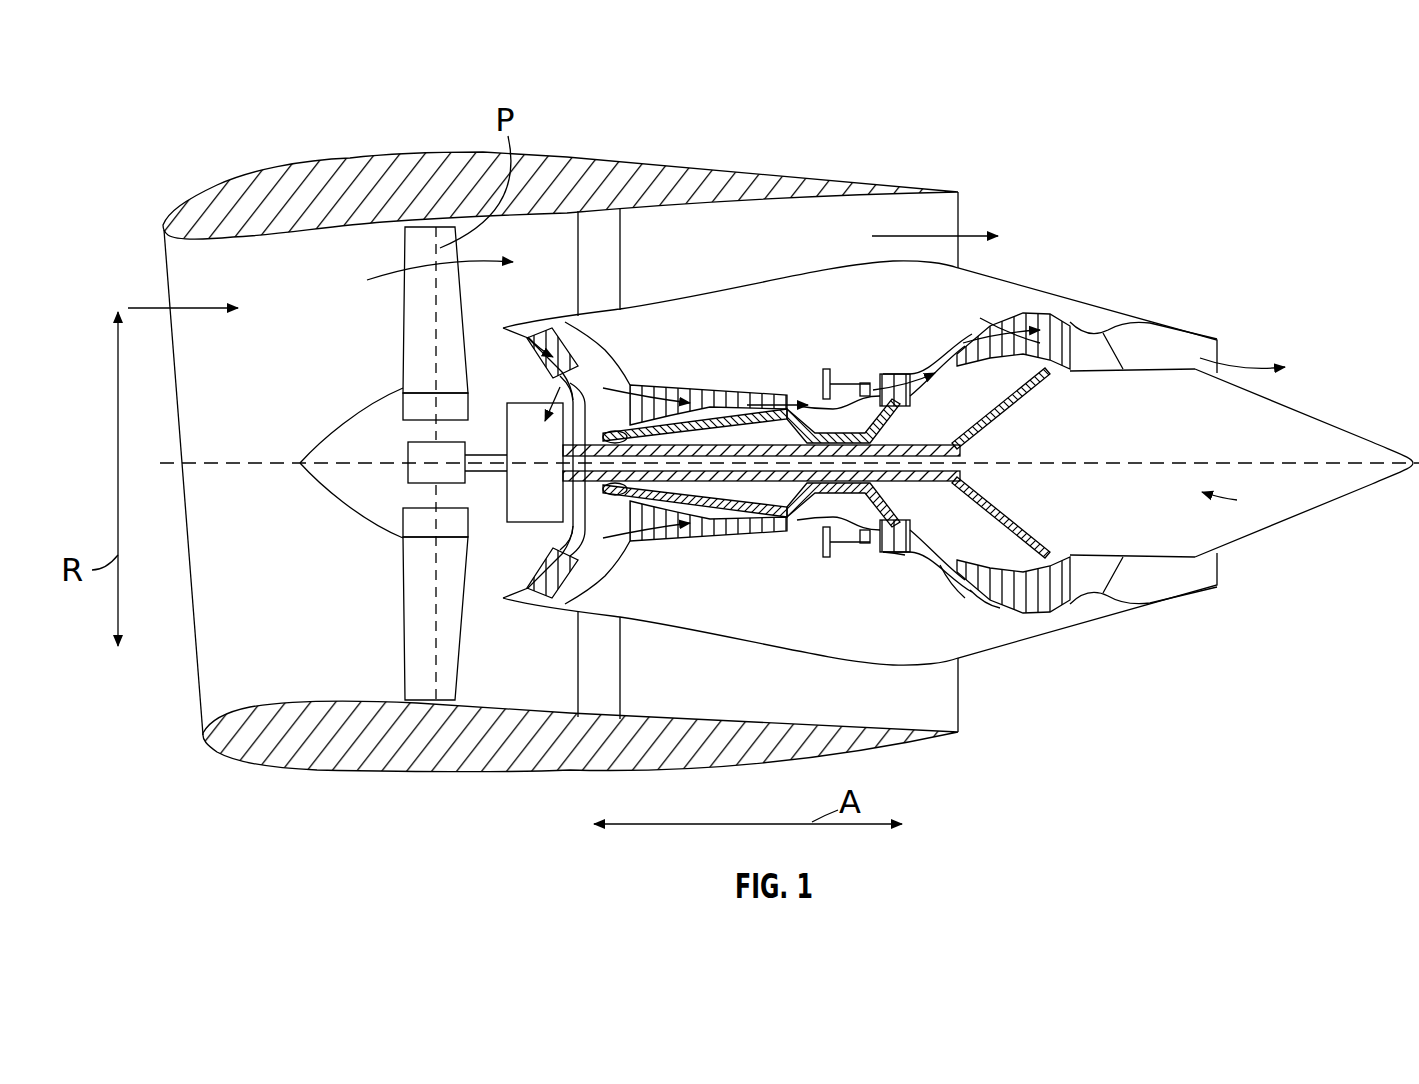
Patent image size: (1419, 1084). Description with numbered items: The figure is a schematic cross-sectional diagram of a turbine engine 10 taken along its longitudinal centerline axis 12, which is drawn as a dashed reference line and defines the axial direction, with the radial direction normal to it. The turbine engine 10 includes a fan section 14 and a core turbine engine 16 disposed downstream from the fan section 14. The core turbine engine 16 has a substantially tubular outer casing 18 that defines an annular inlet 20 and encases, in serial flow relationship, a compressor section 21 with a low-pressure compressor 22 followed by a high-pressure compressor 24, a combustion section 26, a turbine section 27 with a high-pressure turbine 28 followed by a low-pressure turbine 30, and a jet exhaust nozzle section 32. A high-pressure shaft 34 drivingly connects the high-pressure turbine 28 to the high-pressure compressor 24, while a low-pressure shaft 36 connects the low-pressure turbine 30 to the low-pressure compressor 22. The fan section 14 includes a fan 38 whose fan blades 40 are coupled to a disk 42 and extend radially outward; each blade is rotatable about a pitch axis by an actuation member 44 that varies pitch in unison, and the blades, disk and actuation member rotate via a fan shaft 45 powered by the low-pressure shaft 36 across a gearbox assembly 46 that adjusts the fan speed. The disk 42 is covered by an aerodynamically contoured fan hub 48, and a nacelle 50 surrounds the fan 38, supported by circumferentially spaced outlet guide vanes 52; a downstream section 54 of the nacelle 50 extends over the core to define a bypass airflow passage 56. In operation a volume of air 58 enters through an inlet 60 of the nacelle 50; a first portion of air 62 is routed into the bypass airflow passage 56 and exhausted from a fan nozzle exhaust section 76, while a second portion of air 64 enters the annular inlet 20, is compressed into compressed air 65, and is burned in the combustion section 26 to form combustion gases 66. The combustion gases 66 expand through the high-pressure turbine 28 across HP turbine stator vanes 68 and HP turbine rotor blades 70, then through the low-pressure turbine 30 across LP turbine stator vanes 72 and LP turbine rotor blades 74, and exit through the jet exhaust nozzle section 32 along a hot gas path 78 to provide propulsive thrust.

The turbine engine 10 is at (1137, 153).
The centerline axis 12 is at (1213, 460).
The fan section 14 is at (372, 244).
The core turbine engine 16 is at (832, 304).
The outer casing 18 is at (795, 652).
The annular inlet 20 is at (514, 590).
The compressor section 21 is at (703, 330).
The low-pressure compressor 22 is at (560, 535).
The high-pressure compressor 24 is at (651, 528).
The combustion section 26 is at (848, 532).
The turbine section 27 is at (945, 317).
The high-pressure turbine 28 is at (920, 543).
The low-pressure turbine 30 is at (1040, 618).
The jet exhaust nozzle section 32 is at (1125, 590).
The high-pressure shaft 34 is at (823, 420).
The low-pressure shaft 36 is at (933, 445).
The fan 38 is at (290, 587).
The fan blades 40 is at (400, 605).
The disk 42 is at (418, 408).
The actuation member 44 is at (408, 450).
The fan shaft 45 is at (470, 452).
The gearbox assembly 46 is at (520, 405).
The fan hub 48 is at (330, 500).
The nacelle 50 is at (420, 772).
The outlet guide vanes 52 is at (620, 280).
The downstream section 54 is at (835, 175).
The bypass airflow passage 56 is at (735, 256).
The volume of air 58 is at (220, 303).
The inlet 60 is at (197, 665).
The first portion of air 62 is at (387, 280).
The second portion of air 64 is at (503, 337).
The compressed air 65 is at (673, 403).
The combustion gases 66 is at (893, 383).
The HP turbine stator vanes 68 is at (885, 552).
The HP turbine rotor blades 70 is at (893, 522).
The LP turbine stator vanes 72 is at (963, 580).
The LP turbine rotor blades 74 is at (978, 587).
The fan nozzle exhaust section 76 is at (953, 220).
The hot gas path 78 is at (937, 353).